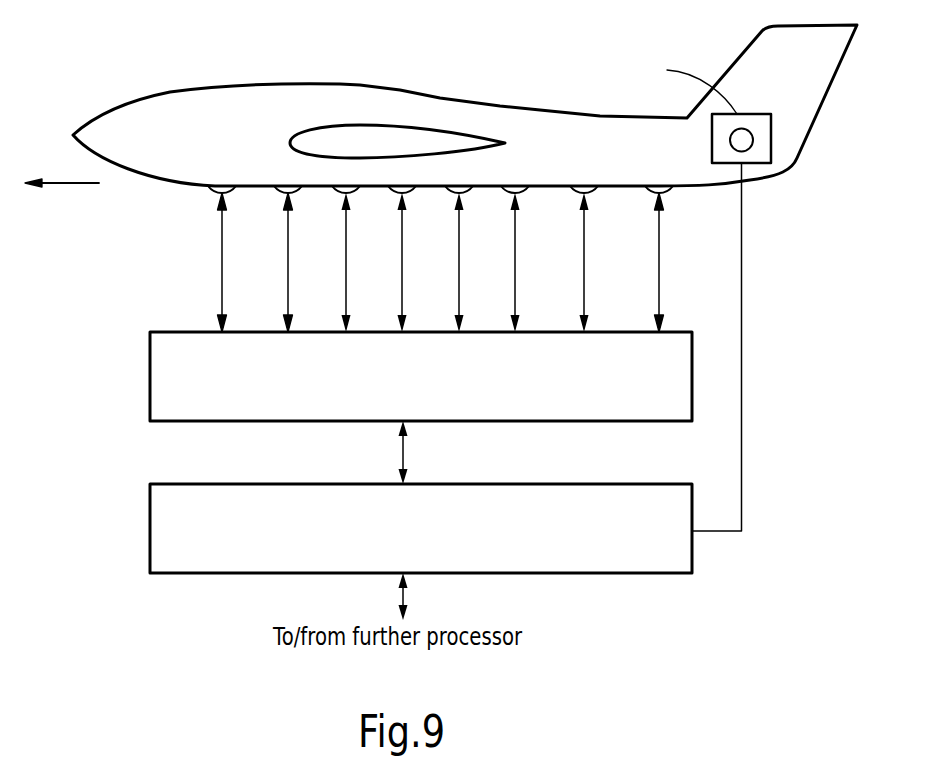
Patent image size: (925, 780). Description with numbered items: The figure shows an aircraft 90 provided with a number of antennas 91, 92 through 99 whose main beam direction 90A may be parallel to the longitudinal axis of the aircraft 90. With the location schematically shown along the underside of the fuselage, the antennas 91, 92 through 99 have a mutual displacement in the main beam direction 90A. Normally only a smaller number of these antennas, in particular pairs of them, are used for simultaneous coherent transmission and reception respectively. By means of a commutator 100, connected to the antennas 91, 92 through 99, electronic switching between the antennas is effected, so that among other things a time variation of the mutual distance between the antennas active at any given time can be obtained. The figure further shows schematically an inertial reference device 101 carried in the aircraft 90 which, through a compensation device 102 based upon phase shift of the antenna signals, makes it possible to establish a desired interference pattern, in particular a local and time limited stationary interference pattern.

The aircraft 90 is at (235, 82).
The main beam direction 90A is at (68, 185).
The antenna 91 is at (207, 188).
The antenna 92 is at (275, 188).
The antenna 99 is at (670, 190).
The commutator 100 is at (150, 377).
The inertial reference device 101 is at (771, 138).
The compensation device 102 is at (150, 520).